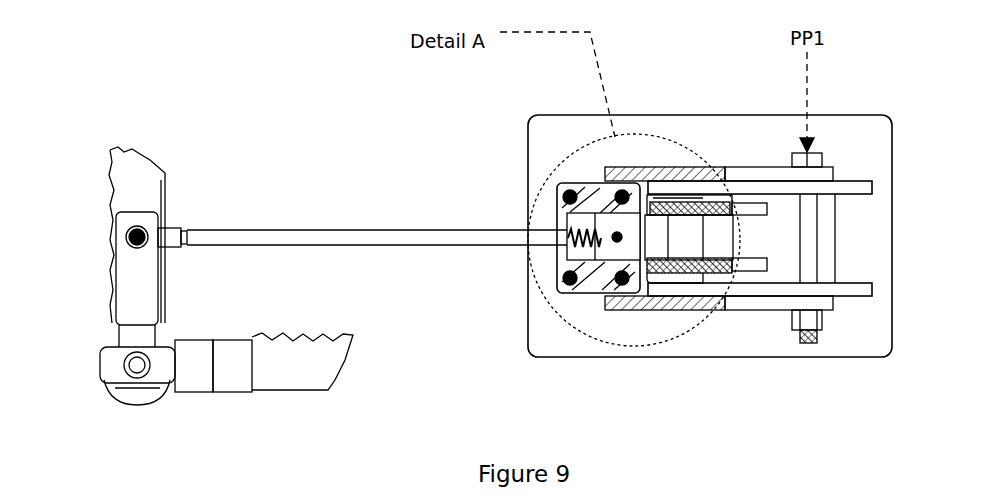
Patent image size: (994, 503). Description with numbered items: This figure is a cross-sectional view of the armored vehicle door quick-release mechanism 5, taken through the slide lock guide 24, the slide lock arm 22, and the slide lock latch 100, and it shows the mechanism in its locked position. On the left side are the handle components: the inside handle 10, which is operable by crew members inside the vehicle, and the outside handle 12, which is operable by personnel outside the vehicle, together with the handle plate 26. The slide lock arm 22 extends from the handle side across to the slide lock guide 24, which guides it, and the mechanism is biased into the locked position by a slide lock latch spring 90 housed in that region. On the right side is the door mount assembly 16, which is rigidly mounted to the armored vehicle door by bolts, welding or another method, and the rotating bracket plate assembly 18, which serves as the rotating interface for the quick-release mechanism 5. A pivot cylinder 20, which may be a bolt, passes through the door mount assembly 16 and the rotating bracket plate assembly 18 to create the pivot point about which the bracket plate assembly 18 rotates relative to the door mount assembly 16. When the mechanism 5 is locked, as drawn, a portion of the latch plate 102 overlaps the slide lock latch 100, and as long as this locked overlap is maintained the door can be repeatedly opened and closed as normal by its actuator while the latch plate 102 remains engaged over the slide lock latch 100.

The armored vehicle door quick-release mechanism 5 is at (362, 72).
The inside handle 10 is at (285, 378).
The outside handle 12 is at (135, 177).
The door mount assembly 16 is at (738, 172).
The rotating bracket plate assembly 18 is at (753, 185).
The pivot cylinder 20 is at (808, 245).
The slide lock arm 22 is at (338, 238).
The slide lock guide 24 is at (578, 190).
The handle plate 26 is at (138, 282).
The slide lock latch spring 90 is at (565, 250).
The slide lock latch 100 is at (653, 232).
The latch plate 102 is at (685, 232).